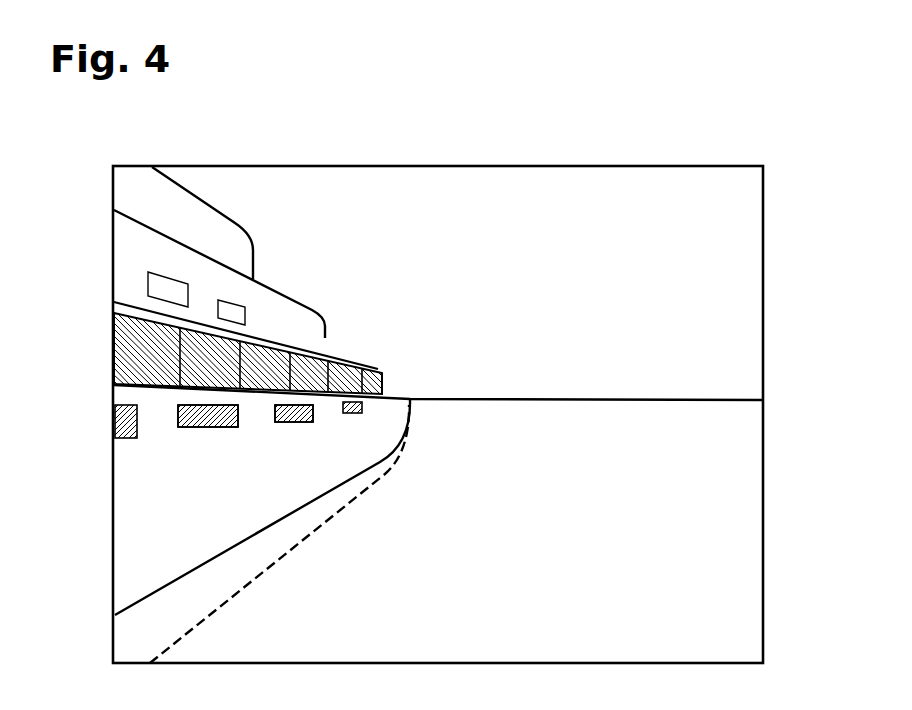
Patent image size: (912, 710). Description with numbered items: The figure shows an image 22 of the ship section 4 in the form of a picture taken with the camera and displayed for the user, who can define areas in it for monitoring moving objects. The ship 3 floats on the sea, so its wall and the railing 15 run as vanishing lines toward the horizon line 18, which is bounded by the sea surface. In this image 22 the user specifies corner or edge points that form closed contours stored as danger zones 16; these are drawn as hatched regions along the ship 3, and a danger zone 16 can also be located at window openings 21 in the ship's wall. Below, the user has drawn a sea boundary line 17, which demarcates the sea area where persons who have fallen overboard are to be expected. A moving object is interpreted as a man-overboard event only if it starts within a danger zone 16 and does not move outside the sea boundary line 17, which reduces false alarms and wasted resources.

The ship 3 is at (256, 248).
The ship section 4 is at (529, 258).
The railing 15 is at (365, 370).
The danger zones 16 is at (160, 353).
The sea boundary line 17 is at (280, 557).
The horizon line 18 is at (624, 398).
The window openings 21 is at (207, 428).
The image 22 is at (603, 165).